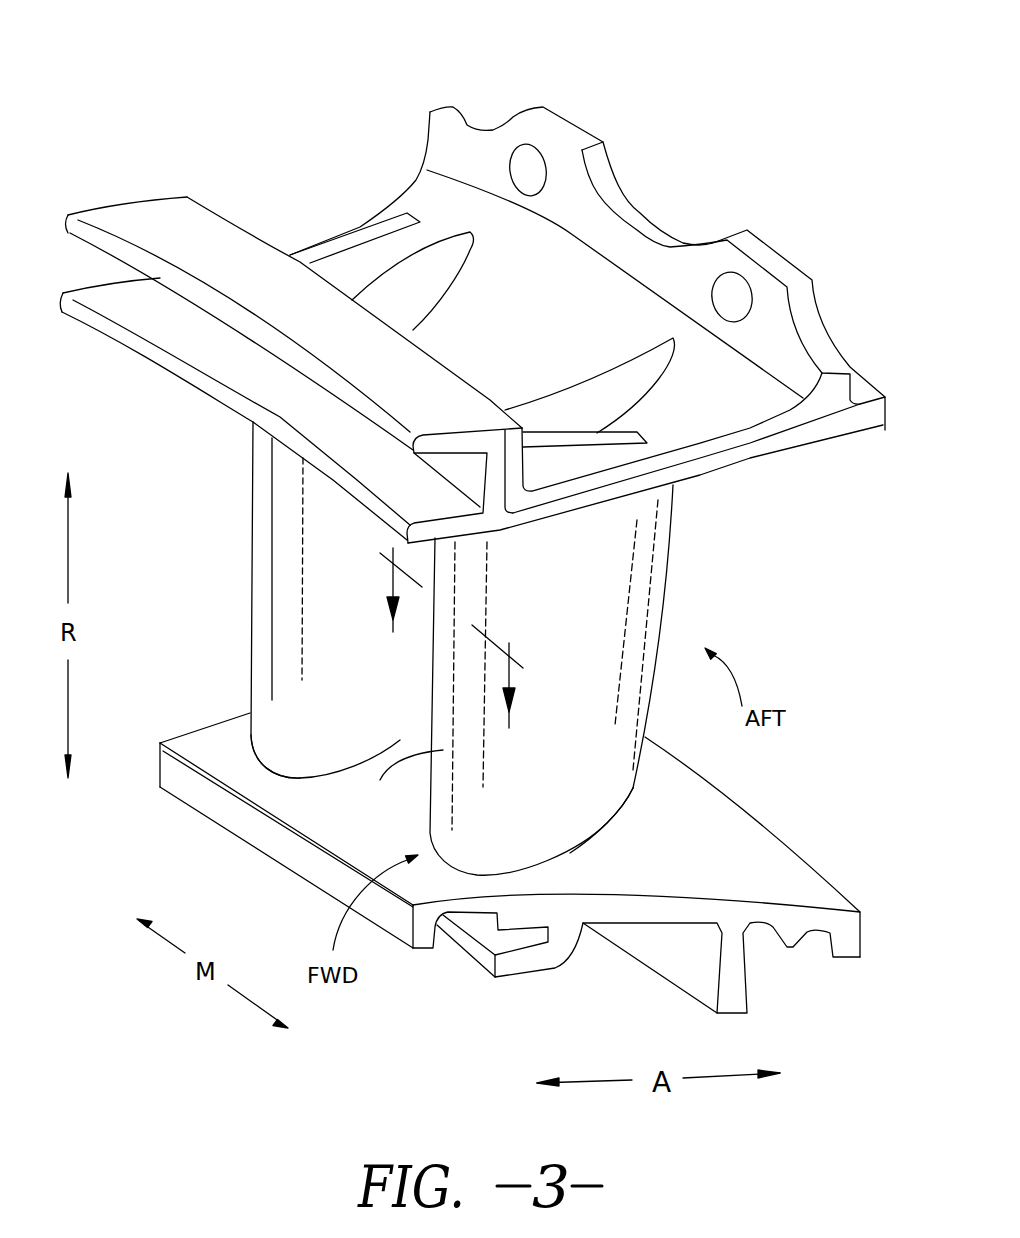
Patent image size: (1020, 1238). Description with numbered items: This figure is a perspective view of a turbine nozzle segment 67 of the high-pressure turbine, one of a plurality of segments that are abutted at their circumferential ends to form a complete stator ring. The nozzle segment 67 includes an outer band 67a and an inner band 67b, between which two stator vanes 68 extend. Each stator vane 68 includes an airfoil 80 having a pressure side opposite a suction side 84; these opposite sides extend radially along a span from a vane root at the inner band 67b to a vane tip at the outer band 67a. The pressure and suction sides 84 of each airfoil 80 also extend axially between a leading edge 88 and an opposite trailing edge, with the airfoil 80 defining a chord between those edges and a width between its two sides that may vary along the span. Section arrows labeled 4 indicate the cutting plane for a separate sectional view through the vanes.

The turbine nozzle segment 67 is at (472, 520).
The outer band 67a is at (823, 441).
The inner band 67b is at (770, 860).
The stator vane 68 is at (228, 570).
The airfoil 80 is at (364, 740).
The suction side 84 is at (616, 777).
The leading edge 88 is at (268, 740).
The section line 4- 4 is at (452, 643).